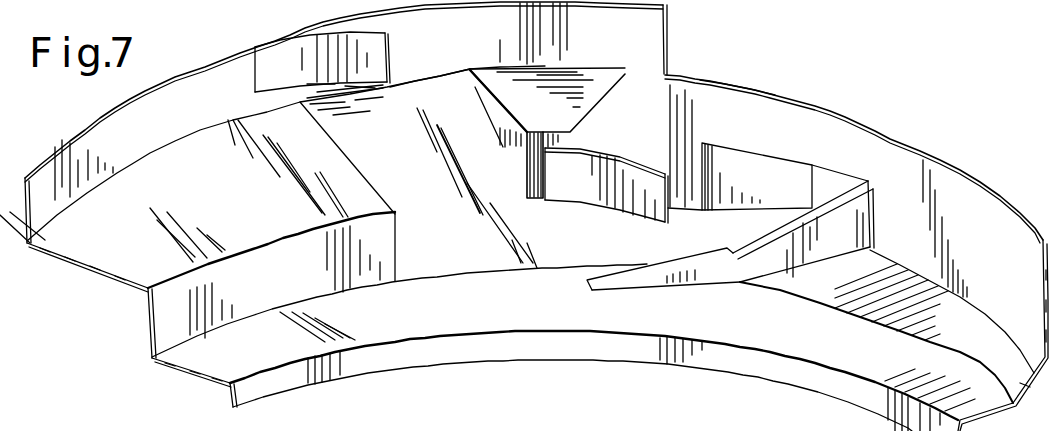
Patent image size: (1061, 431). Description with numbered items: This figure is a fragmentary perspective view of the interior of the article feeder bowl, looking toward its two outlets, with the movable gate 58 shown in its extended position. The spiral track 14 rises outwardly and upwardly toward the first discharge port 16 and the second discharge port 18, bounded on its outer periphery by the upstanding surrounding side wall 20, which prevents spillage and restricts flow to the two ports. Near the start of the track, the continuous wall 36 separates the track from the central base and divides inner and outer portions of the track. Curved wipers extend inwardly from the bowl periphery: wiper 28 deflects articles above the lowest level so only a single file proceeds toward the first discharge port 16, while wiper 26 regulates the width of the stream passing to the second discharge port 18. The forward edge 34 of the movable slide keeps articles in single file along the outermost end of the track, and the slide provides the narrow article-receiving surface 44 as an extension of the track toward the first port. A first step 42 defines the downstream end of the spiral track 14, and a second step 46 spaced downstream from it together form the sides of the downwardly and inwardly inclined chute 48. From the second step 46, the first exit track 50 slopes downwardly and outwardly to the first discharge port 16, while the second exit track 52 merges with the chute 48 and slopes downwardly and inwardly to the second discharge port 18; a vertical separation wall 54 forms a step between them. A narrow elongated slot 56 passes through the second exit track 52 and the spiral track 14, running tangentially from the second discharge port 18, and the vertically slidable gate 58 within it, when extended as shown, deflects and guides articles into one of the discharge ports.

The spiral track 14 is at (135, 230).
The first discharge port 16 is at (667, 74).
The second discharge port 18 is at (832, 177).
The upstanding surrounding side wall 20 is at (485, 39).
The wiper 26 is at (611, 167).
The wiper 28 is at (314, 47).
The forward edge 34 is at (382, 100).
The continuous wall 36 is at (168, 305).
The first step 42 is at (376, 192).
The article-receiving surface 44 is at (426, 82).
The second step 46 is at (508, 144).
The inclined chute 48 is at (460, 210).
The first exit track 50 is at (584, 77).
The second exit track 52 is at (647, 257).
The separation wall 54 is at (728, 100).
The slot 56 is at (812, 265).
The gate 58 is at (851, 228).